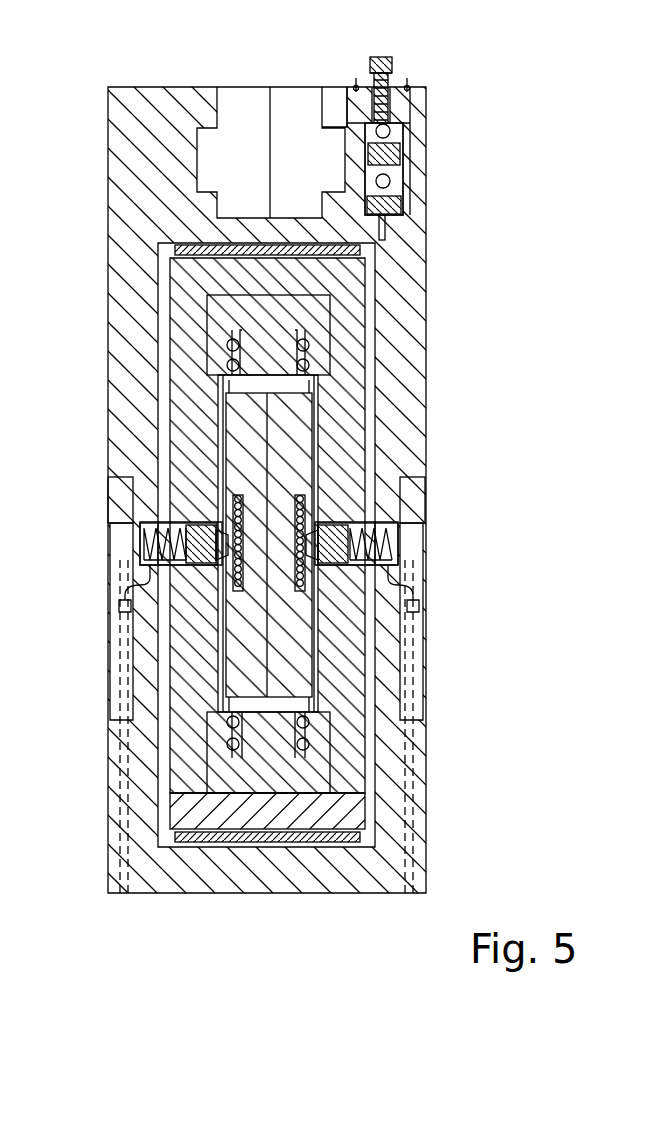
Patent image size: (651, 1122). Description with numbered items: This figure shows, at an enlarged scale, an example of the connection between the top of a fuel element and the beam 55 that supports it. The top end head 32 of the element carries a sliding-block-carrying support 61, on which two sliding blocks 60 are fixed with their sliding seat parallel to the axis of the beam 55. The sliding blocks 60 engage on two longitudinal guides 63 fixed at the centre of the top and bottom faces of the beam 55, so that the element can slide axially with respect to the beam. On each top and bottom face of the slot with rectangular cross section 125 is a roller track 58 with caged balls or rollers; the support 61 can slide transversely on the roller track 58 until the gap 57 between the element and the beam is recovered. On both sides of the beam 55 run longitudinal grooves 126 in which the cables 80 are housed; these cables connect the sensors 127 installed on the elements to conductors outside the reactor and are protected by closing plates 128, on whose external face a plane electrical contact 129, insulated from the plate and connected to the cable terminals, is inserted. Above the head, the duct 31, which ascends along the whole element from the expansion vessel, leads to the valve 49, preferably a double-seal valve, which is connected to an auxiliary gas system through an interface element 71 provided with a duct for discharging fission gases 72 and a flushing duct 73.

The top end head 32 is at (122, 432).
The gap 57 is at (368, 428).
The sliding-block-carrying support 61 is at (338, 656).
The roller track 58 is at (185, 244).
The sliding blocks 60 is at (218, 315).
The longitudinal guides 63 is at (305, 336).
The beam 55 is at (283, 462).
The slot with rectangular cross section 125 is at (316, 412).
The plane electrical contact 129 is at (230, 525).
The longitudinal grooves 126 is at (330, 503).
The sensors 127 is at (232, 575).
The closing plates 128 is at (216, 568).
The cables 80 is at (325, 592).
The valve 49 is at (405, 165).
The duct 31 is at (386, 236).
The flushing duct 73 is at (372, 68).
The duct for discharging fission gases 72 is at (390, 72).
The interface element 71 is at (393, 80).